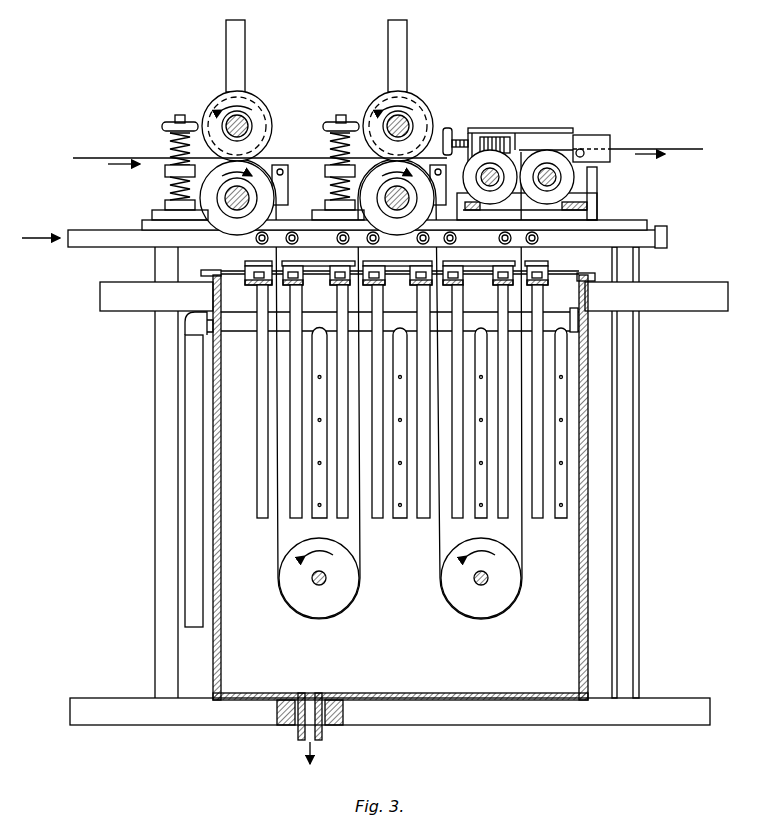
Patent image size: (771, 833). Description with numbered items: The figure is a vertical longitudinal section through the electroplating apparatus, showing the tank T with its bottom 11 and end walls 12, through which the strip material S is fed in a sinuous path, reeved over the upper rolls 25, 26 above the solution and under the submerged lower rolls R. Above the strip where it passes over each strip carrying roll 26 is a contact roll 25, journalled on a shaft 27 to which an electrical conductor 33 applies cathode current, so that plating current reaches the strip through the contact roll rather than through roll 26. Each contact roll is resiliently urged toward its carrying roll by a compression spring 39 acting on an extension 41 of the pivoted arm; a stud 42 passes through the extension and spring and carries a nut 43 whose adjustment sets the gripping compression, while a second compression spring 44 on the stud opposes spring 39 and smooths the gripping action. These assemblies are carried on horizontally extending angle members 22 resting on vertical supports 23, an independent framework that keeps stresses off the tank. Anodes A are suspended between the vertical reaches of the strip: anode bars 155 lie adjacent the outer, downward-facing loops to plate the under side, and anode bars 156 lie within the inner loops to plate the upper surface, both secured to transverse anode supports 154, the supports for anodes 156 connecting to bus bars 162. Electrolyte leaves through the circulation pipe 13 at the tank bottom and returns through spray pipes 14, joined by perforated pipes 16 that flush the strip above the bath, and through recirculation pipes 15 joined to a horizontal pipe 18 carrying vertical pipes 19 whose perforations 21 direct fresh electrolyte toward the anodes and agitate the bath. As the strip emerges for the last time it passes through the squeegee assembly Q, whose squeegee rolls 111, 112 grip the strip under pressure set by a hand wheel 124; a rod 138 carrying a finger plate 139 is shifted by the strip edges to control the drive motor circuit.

The bottom 11 is at (440, 697).
The end walls 12 is at (222, 649).
The circulation pipe 13 is at (308, 696).
The spray pipes 14 is at (100, 215).
The recirculation pipes 15 is at (185, 596).
The perforated pipes 16 is at (290, 244).
The horizontal pipe 18 is at (551, 318).
The vertical pipes 19 is at (478, 511).
The perforations 21 is at (400, 516).
The angle members 22 is at (621, 222).
The vertical supports 23 is at (155, 542).
The contact roll 25 is at (313, 114).
The strip carrying roll 26 is at (266, 188).
The shaft 27 is at (234, 125).
The electrical conductor 33 is at (246, 52).
The compression spring 39 is at (170, 148).
The extension 41 is at (165, 173).
The stud 42 is at (330, 141).
The nut 43 is at (178, 116).
The second compression spring 44 is at (170, 192).
The squeegee roll 111 is at (503, 157).
The squeegee roll 112 is at (575, 182).
The hand wheel 124 is at (447, 127).
The rod 138 is at (581, 148).
The plate 139 is at (608, 131).
The anode supports 154 is at (543, 264).
The anode bars 155 is at (255, 519).
The anode bars 156 is at (342, 519).
The bus bars 162 is at (685, 292).
The strip material S is at (111, 157).
The carrier belt C is at (258, 160).
The squeegee assembly Q is at (536, 130).
The anodes A is at (256, 392).
The lower rolls R is at (330, 608).
The tank T is at (392, 485).